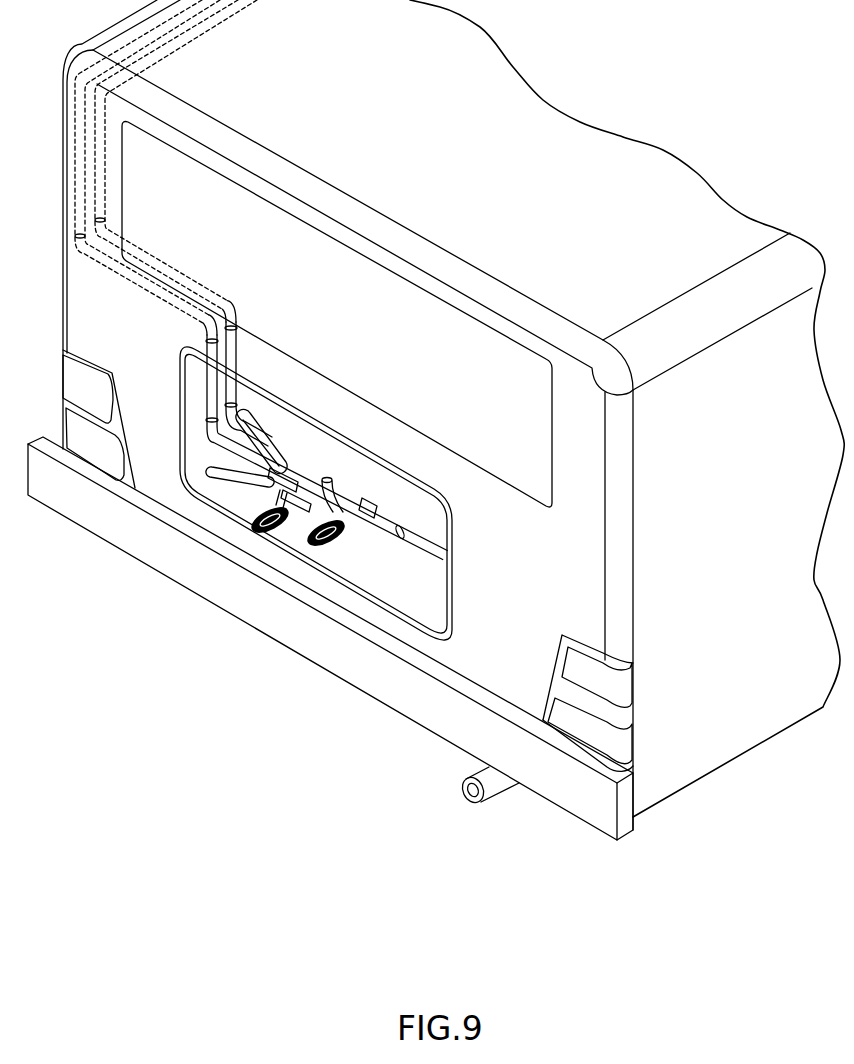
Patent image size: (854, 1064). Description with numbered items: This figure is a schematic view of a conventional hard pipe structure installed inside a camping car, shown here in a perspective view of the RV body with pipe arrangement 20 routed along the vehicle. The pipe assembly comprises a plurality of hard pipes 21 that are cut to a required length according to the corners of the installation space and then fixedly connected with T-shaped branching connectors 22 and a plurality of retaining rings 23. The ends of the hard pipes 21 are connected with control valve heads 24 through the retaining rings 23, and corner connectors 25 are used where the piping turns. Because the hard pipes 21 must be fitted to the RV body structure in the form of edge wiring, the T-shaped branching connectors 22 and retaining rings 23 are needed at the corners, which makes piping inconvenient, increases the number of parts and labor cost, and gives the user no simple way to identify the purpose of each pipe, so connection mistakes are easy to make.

The support frame 20 is at (357, 548).
The hard pipe 21 is at (402, 520).
The T-shaped branching connector 22 is at (345, 530).
The retaining ring 23 is at (366, 538).
The control valve head 24 is at (322, 537).
The corner connector 25 is at (80, 257).